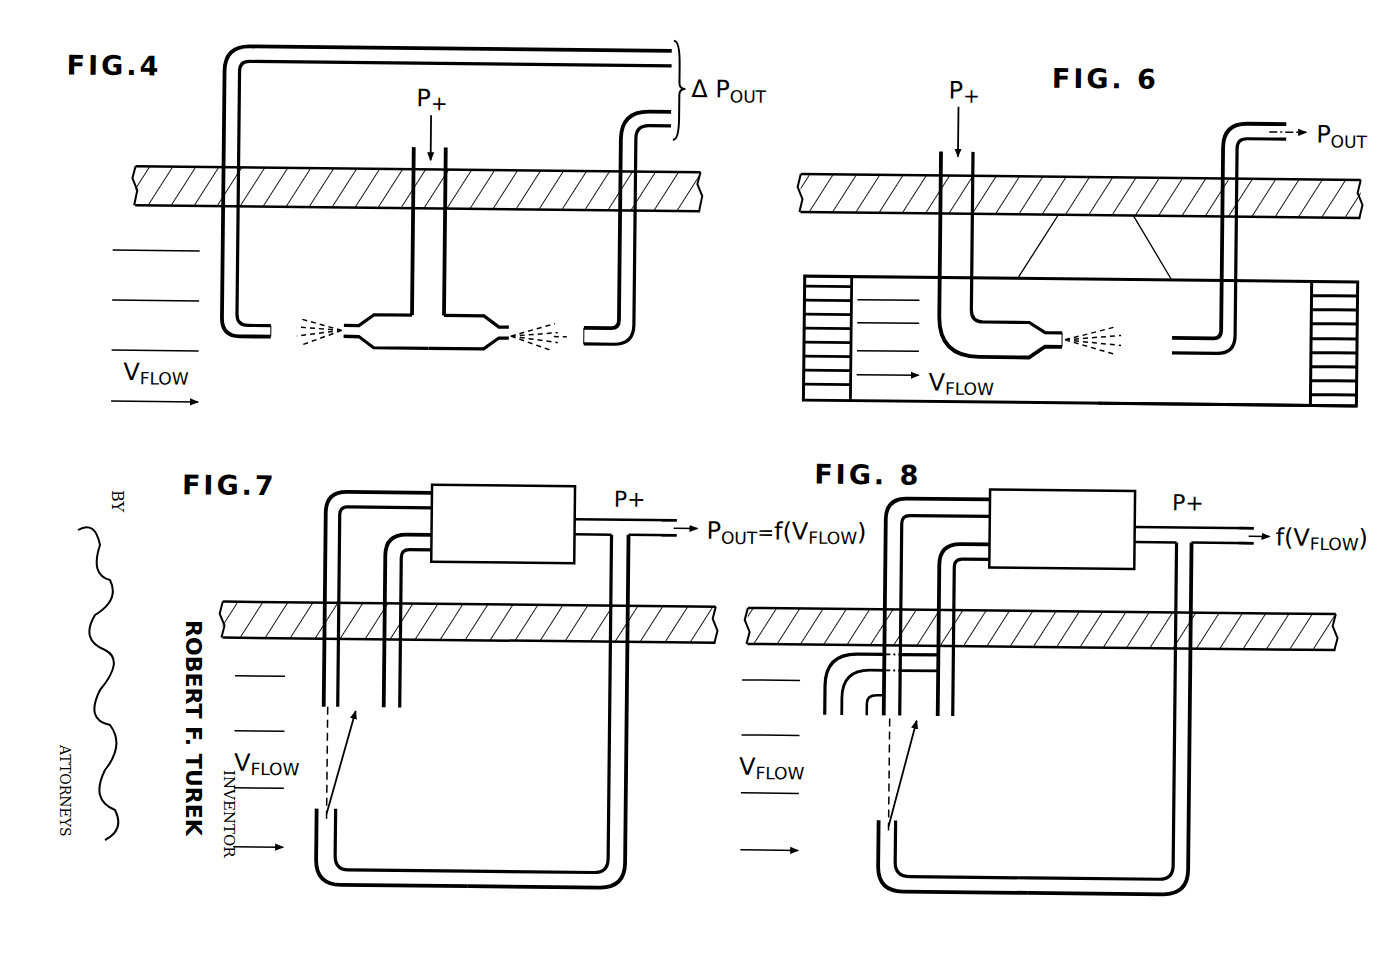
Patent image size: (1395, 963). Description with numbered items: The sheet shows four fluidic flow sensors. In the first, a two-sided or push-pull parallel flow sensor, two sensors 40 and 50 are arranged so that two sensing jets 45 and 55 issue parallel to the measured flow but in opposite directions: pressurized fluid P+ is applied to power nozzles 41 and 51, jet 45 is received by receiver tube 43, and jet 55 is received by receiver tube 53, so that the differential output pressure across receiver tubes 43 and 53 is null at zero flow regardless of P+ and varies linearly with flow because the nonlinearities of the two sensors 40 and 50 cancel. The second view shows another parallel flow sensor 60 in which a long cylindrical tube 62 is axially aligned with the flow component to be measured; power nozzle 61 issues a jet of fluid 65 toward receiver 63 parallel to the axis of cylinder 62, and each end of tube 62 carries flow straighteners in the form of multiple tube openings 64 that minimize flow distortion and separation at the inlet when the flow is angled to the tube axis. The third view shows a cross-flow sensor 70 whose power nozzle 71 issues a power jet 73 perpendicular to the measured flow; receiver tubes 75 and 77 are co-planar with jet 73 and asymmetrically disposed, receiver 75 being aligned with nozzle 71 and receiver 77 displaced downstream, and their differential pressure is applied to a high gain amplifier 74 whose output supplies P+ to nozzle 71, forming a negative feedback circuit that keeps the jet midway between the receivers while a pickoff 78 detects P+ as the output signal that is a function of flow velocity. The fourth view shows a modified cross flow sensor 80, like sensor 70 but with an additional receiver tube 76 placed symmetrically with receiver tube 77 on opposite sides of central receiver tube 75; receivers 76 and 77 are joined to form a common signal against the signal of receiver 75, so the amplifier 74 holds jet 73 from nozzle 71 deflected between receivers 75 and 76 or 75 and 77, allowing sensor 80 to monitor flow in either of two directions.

In FIG. 4, the sensor 40 is at (566, 328).
In FIG. 4, the power nozzle 41 is at (498, 326).
In FIG. 4, the receiver tube 43 is at (600, 348).
In FIG. 4, the jet 45 is at (532, 350).
In FIG. 4, the sensor 50 is at (287, 343).
In FIG. 4, the power nozzle 51 is at (352, 345).
In FIG. 4, the receiver tube 53 is at (262, 326).
In FIG. 4, the jet 55 is at (326, 326).
In FIG. 6, the parallel flow sensor 60 is at (1143, 405).
In FIG. 6, the power nozzle 61 is at (1044, 332).
In FIG. 6, the cylindrical tube 62 is at (1255, 405).
In FIG. 6, the receiver 63 is at (1193, 340).
In FIG. 6, the flow straighteners 64 is at (832, 390).
In FIG. 6, the jet of fluid 65 is at (1090, 332).
In FIG. 7, the flow sensor 70 is at (632, 750).
In FIG. 7, the power nozzle 71 is at (340, 838).
In FIG. 8, the power nozzle 71 is at (900, 848).
In FIG. 7, the power jet 73 is at (355, 774).
In FIG. 8, the power jet 73 is at (906, 770).
In FIG. 7, the high gain amplifier 74 is at (513, 484).
In FIG. 8, the high gain amplifier 74 is at (1104, 489).
In FIG. 7, the receiver tube 75 is at (322, 678).
In FIG. 8, the receiver tube 75 is at (918, 627).
In FIG. 8, the receiver tube 76 is at (822, 688).
In FIG. 7, the receiver tube 77 is at (400, 676).
In FIG. 8, the receiver tube 77 is at (956, 690).
In FIG. 7, the pickoff 78 is at (666, 517).
In FIG. 8, the pickoff 78 is at (1228, 527).
In FIG. 8, the modified cross flow sensor 80 is at (1194, 805).